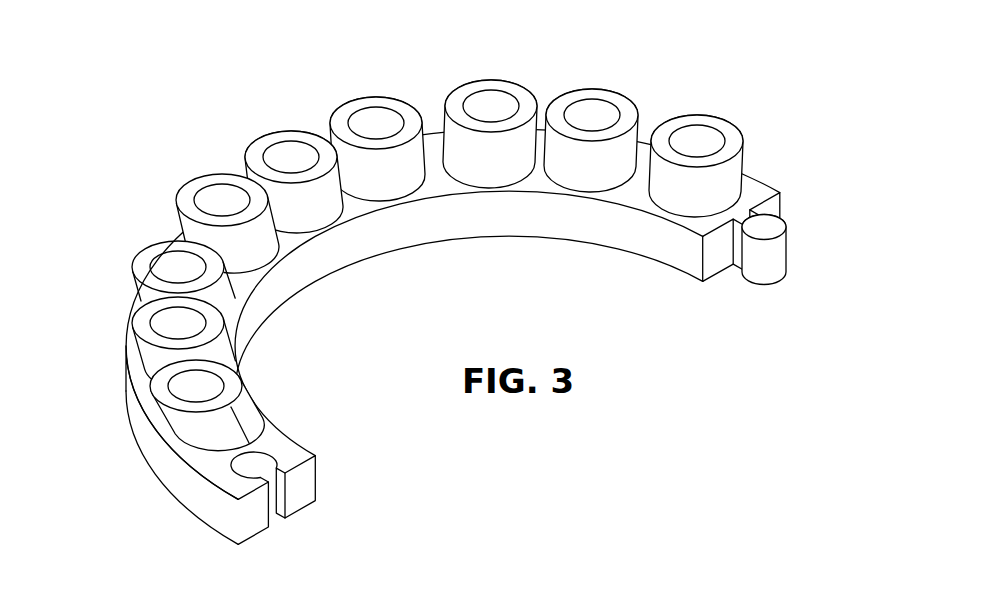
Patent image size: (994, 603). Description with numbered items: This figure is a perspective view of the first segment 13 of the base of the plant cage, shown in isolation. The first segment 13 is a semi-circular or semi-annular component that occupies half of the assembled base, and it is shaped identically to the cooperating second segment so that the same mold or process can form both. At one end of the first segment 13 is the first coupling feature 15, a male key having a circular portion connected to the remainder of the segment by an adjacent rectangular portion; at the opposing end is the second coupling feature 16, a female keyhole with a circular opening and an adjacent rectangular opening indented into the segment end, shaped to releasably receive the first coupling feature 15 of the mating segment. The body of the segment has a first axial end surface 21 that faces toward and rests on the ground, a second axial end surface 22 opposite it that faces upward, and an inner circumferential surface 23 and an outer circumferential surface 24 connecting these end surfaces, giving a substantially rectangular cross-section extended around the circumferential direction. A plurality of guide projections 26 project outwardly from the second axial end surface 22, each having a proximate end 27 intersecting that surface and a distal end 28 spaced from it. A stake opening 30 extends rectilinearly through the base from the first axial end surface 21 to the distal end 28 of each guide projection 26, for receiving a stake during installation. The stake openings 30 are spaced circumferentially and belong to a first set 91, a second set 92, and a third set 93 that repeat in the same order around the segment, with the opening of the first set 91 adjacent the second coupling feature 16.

The first segment 13 is at (195, 151).
The stake opening 30 is at (197, 383).
The first set 91 is at (490, 104).
The second set 92 is at (594, 113).
The third set 93 is at (699, 139).
The distal end 28 is at (160, 381).
The guide projection 26 is at (240, 403).
The proximate end 27 is at (202, 455).
The outer circumferential surface 24 is at (143, 430).
The second axial end surface 22 is at (272, 437).
The inner circumferential surface 23 is at (577, 222).
The first axial end surface 21 is at (616, 250).
The first coupling feature 15 is at (791, 272).
The second coupling feature 16 is at (284, 520).